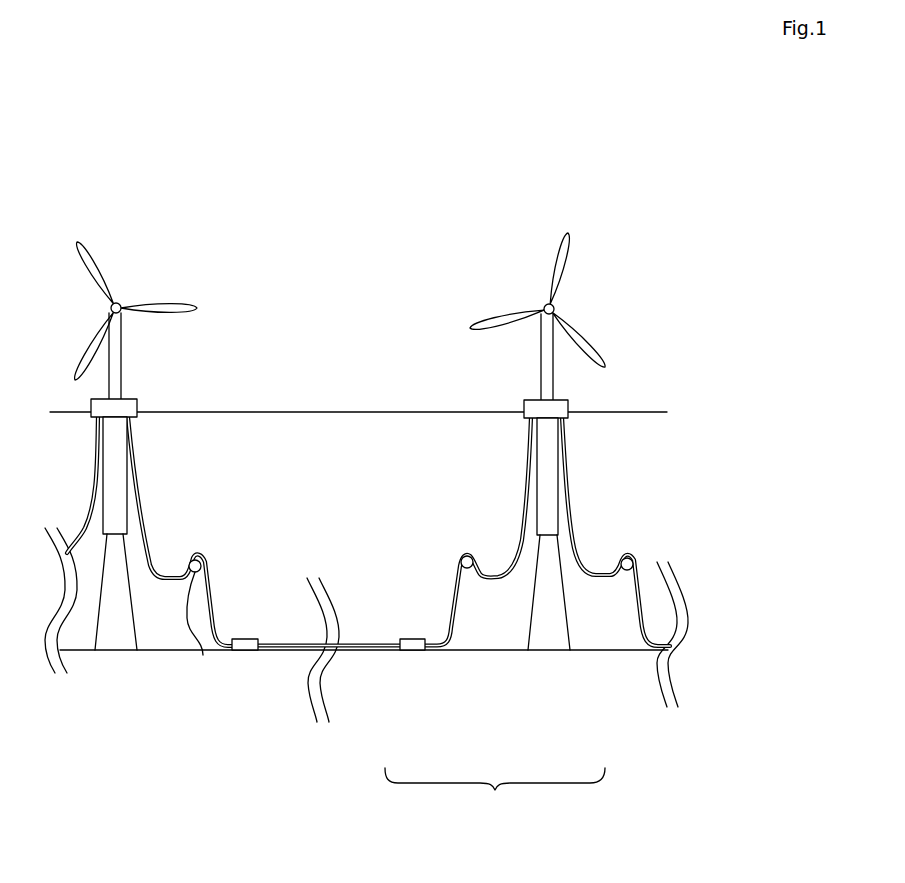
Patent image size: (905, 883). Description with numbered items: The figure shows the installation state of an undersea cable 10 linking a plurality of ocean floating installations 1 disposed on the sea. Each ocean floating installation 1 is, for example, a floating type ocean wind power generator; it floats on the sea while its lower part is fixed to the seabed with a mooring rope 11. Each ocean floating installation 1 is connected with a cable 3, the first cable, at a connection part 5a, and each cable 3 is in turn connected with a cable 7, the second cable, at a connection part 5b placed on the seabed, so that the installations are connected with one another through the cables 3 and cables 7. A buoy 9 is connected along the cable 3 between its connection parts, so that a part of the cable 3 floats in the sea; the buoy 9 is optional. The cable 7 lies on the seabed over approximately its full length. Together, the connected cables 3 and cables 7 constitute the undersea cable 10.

The ocean floating installation 1 is at (372, 470).
The cable 3 is at (455, 620).
The connection part 5a is at (560, 405).
The connection part 5b is at (242, 651).
The cable 7 is at (393, 651).
The buoy 9 is at (203, 655).
The undersea cable 10 is at (495, 790).
The mooring rope 11 is at (97, 627).